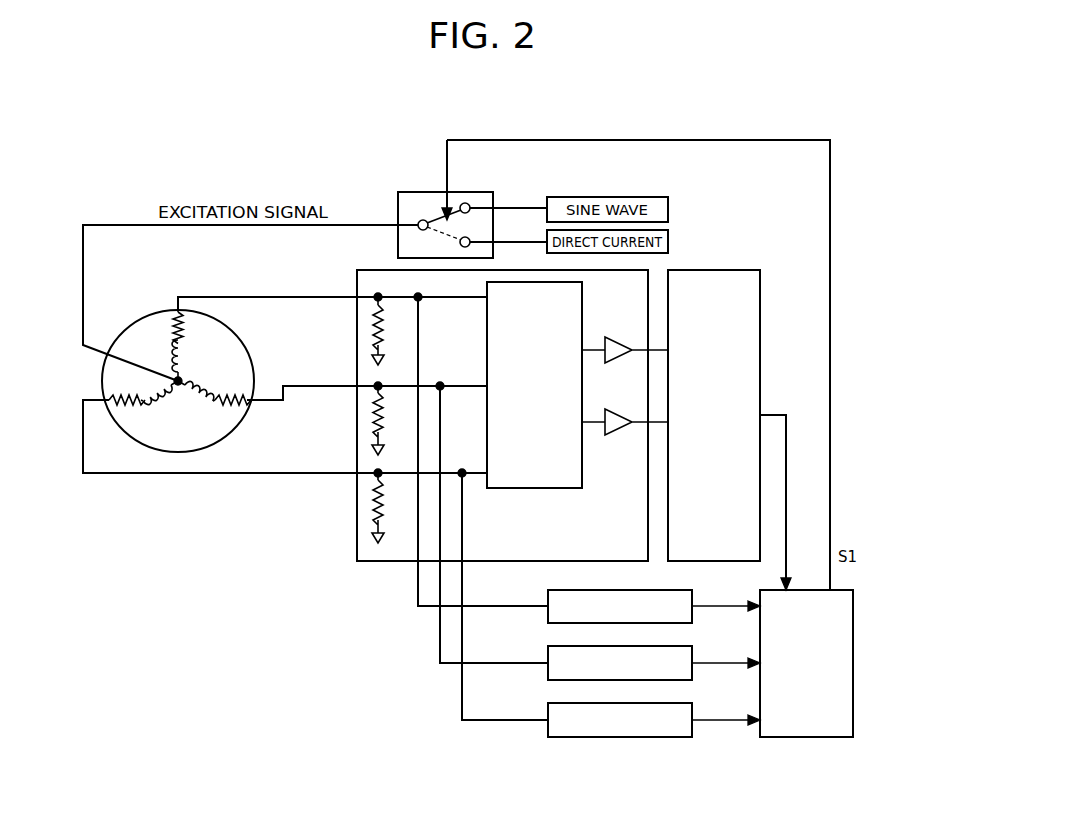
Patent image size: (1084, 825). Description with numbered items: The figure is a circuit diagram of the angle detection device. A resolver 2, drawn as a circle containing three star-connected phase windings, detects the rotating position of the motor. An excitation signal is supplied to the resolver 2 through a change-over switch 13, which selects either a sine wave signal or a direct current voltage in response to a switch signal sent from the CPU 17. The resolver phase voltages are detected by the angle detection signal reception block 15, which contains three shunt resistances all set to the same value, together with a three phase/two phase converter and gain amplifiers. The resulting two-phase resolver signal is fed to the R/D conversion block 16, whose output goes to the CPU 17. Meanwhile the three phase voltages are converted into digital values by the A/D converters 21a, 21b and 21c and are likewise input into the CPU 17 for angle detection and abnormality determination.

The resolver 2 is at (120, 324).
The change-over switch 13 is at (474, 192).
The angle detection signal reception block 15 is at (357, 537).
The R/D conversion block 16 is at (731, 270).
The CPU 17 is at (853, 672).
The A/D converter 21a is at (662, 590).
The A/D converter 21b is at (662, 646).
The A/D converter 21c is at (662, 703).